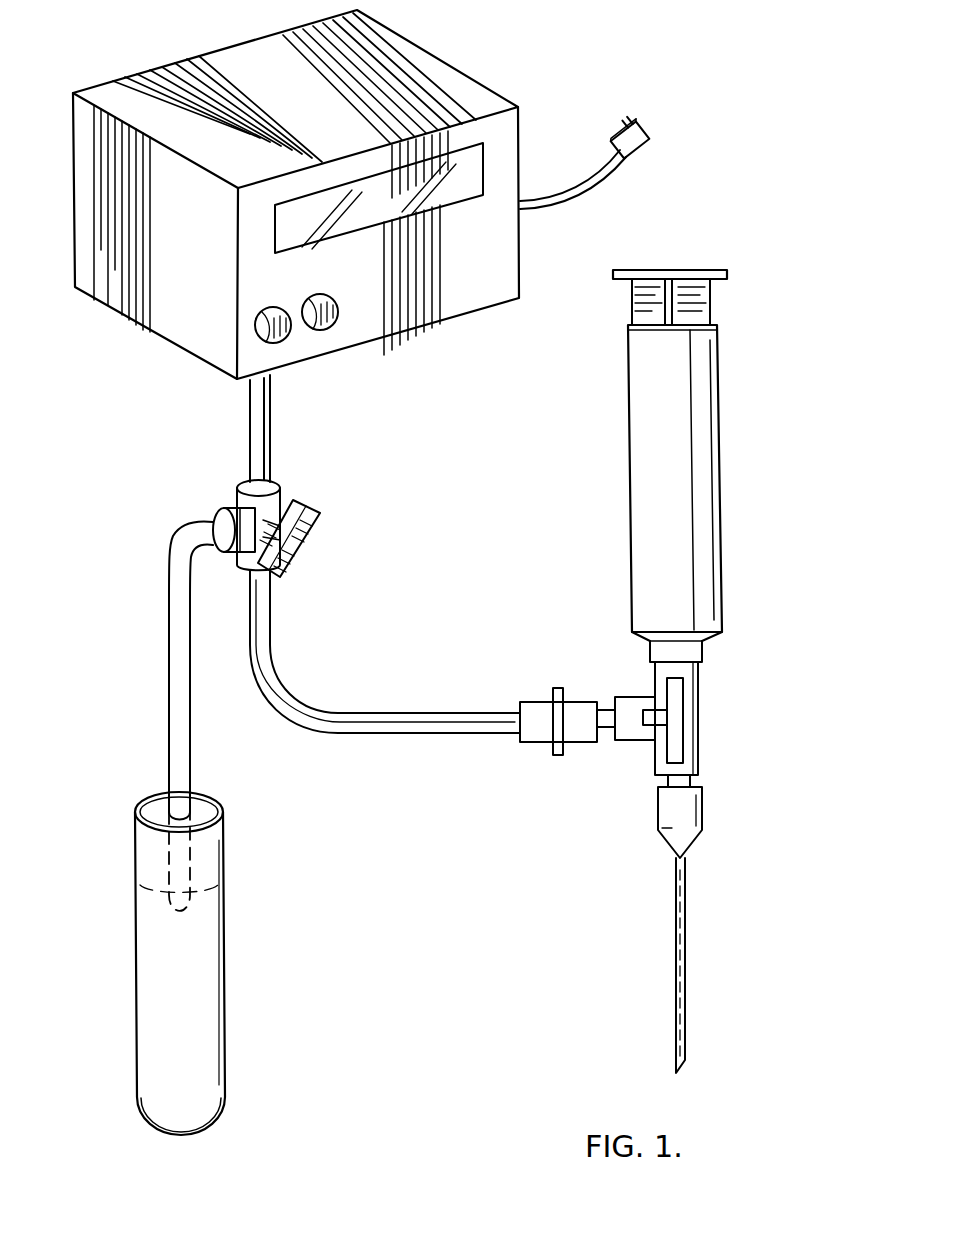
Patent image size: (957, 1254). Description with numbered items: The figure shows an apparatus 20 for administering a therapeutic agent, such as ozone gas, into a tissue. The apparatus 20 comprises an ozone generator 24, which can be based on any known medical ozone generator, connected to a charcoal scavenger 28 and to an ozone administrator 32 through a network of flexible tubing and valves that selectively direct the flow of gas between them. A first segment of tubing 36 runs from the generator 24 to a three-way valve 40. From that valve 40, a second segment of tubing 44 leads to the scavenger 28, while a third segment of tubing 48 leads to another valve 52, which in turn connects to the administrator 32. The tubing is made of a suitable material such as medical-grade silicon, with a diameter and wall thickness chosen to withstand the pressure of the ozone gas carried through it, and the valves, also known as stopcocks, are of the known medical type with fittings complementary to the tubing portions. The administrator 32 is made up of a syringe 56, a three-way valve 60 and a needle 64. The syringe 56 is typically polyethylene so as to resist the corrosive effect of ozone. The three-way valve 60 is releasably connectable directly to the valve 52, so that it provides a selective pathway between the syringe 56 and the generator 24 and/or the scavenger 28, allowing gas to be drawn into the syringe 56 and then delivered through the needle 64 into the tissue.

The apparatus 20 is at (762, 132).
The ozone generator 24 is at (479, 73).
The charcoal scavenger 28 is at (242, 982).
The ozone administrator 32 is at (720, 267).
The first segment of tubing 36 is at (250, 408).
The three-way valve 40 is at (284, 500).
The second segment of tubing 44 is at (172, 680).
The third segment of tubing 48 is at (291, 695).
The valve 52 is at (528, 700).
The syringe 56 is at (640, 490).
The three-way valve 60 is at (692, 720).
The needle 64 is at (682, 954).